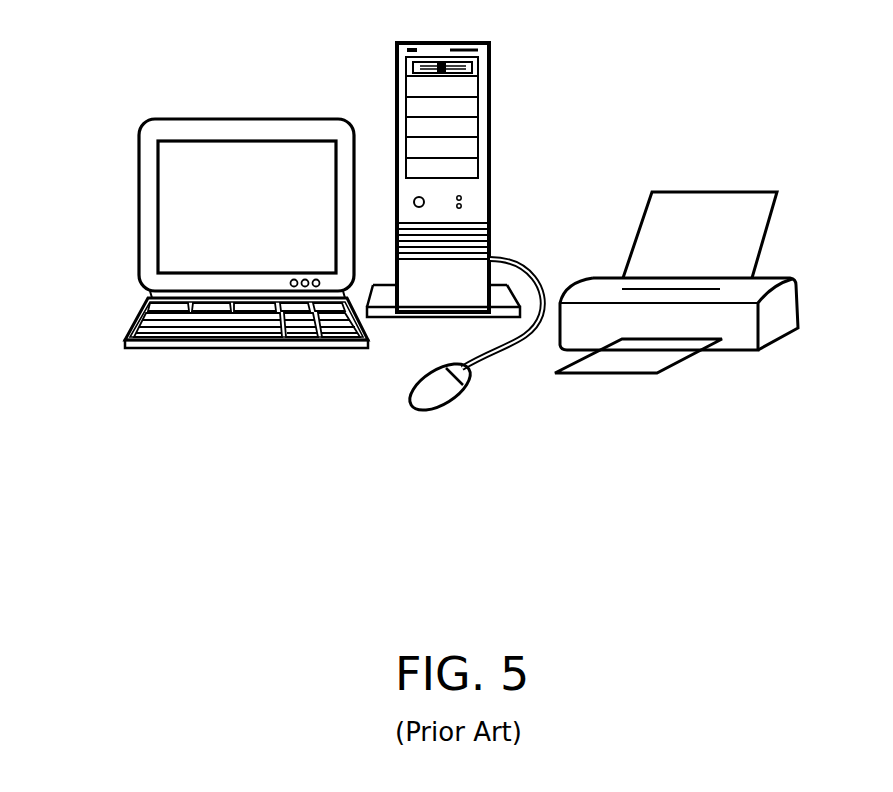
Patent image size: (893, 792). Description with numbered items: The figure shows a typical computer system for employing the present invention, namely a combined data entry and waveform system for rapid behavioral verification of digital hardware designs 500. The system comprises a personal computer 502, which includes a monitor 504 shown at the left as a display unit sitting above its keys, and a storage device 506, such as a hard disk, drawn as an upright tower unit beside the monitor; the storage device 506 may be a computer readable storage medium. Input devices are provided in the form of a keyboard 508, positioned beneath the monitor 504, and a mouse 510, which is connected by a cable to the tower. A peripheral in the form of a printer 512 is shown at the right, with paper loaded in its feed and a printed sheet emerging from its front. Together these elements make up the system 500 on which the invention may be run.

The combined data entry and waveform system for rapid behavioral verification of dig 500 is at (232, 507).
The personal computer 502 is at (138, 228).
The monitor 504 is at (250, 132).
The storage device 506 is at (472, 70).
The keyboard 508 is at (305, 352).
The mouse 510 is at (440, 410).
The printer 512 is at (720, 350).